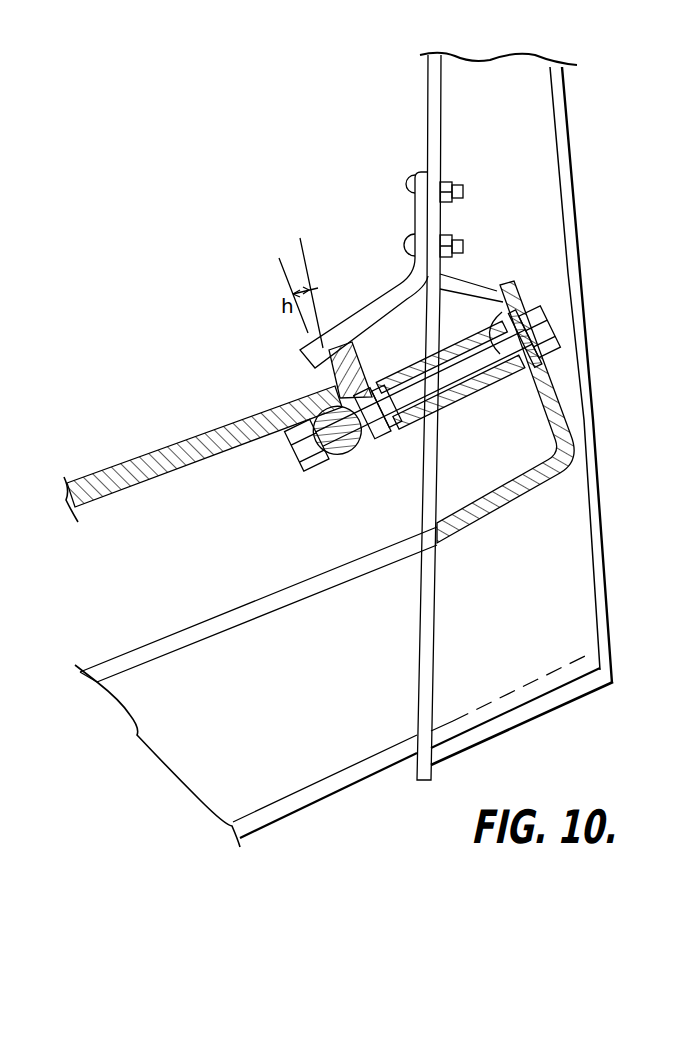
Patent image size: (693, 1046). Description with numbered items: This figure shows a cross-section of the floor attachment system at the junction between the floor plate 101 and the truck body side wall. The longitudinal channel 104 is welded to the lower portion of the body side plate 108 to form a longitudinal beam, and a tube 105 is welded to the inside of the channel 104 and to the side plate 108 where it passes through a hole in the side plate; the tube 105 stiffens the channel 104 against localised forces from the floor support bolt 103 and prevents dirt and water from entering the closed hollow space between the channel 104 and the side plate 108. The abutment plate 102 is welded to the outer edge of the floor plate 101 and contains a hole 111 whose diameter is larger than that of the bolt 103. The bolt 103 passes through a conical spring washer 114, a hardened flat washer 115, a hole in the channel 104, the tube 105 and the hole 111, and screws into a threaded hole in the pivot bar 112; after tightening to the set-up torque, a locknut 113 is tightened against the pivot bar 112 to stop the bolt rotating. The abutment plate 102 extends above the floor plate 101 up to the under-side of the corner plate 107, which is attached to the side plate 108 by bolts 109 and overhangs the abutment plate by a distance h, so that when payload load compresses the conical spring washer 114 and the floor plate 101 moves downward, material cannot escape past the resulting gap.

The floor plate 101 is at (165, 453).
The abutment plate 102 is at (333, 385).
The floor support bolt 103 is at (470, 290).
The longitudinal channel 104 is at (573, 424).
The tube 105 is at (453, 417).
The corner plate 107 is at (381, 300).
The body side plate 108 is at (437, 112).
The bolt 109 is at (404, 248).
The hole 111 is at (392, 450).
The pivot bar 112 is at (347, 462).
The locknut 113 is at (305, 472).
The conical spring washer 114 is at (552, 352).
The hardened flat washer 115 is at (541, 368).